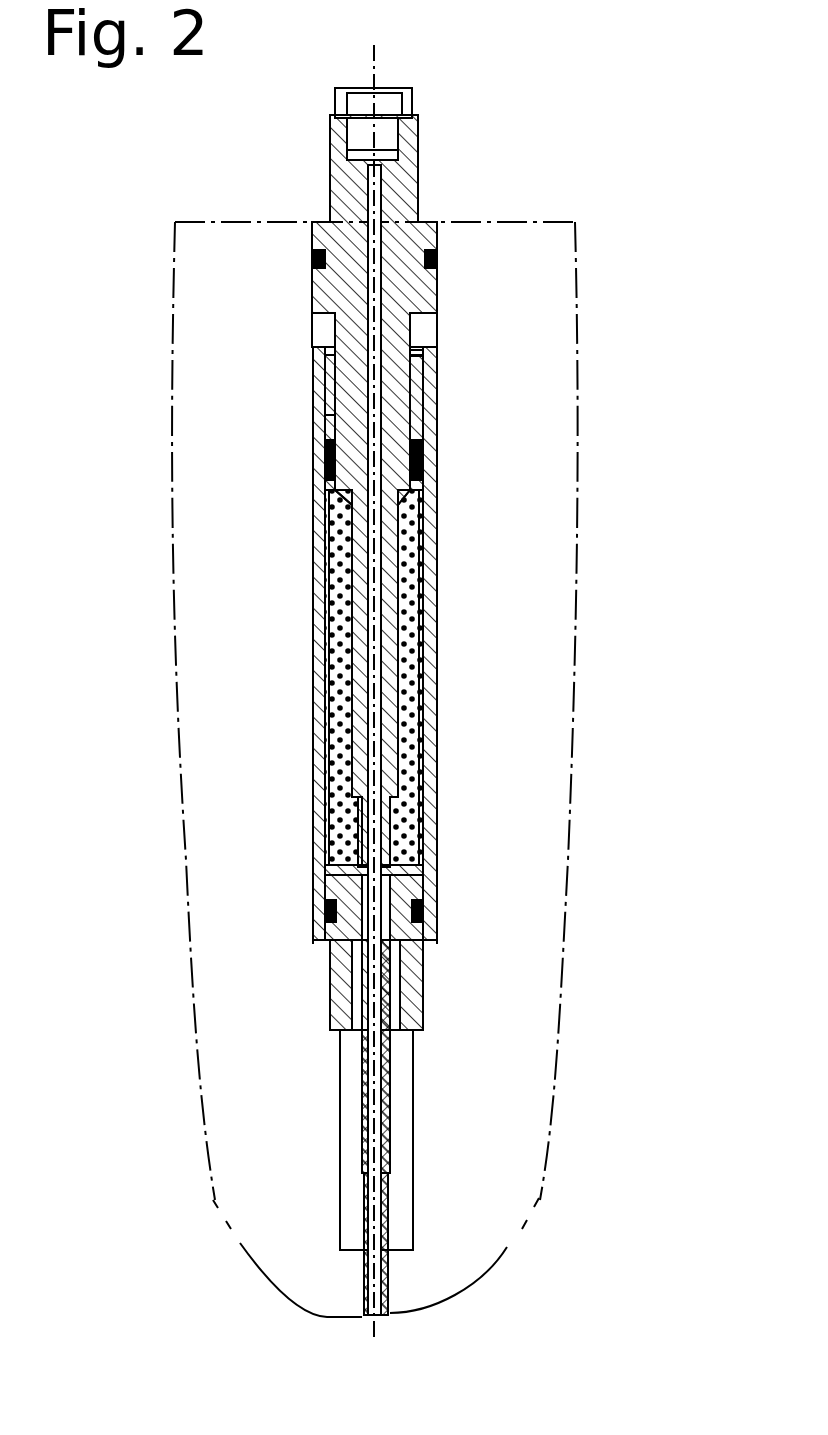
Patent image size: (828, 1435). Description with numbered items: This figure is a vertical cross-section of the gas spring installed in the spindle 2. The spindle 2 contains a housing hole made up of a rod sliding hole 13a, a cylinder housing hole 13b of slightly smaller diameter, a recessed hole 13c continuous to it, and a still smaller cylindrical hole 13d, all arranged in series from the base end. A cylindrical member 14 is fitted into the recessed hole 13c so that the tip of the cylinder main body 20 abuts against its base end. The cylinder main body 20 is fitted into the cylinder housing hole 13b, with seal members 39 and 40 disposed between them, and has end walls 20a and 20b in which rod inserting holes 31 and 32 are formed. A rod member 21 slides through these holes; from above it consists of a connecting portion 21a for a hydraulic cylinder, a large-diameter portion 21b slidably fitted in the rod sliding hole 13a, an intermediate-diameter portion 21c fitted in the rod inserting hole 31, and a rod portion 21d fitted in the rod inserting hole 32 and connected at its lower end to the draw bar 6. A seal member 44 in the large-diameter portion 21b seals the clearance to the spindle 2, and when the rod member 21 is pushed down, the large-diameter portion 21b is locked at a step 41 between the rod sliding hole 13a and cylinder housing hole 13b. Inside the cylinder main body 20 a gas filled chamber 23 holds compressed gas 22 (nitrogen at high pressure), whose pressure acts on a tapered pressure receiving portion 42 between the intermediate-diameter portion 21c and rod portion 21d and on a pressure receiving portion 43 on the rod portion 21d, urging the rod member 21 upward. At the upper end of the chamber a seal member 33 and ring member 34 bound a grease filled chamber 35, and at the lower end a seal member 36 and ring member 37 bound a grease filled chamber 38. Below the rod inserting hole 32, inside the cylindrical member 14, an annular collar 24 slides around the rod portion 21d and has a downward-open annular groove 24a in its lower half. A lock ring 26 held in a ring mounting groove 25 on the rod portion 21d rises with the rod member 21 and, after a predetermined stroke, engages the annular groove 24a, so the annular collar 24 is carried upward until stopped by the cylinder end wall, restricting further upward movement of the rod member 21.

The spindle 2 is at (577, 750).
The draw bar 6 is at (455, 115).
The rod sliding hole 13a is at (420, 207).
The cylinder housing hole 13b is at (435, 570).
The recessed hole 13c is at (423, 985).
The cylindrical hole 13d is at (418, 1188).
The cylindrical member 14 is at (423, 1010).
The cylinder main body 20 is at (320, 705).
The end wall 20a is at (318, 415).
The end wall 20b is at (317, 880).
The rod member 21 is at (420, 190).
The connecting portion 21a is at (335, 118).
The large-diameter portion 21b is at (313, 278).
The intermediate-diameter portion 21c is at (340, 465).
The rod portion 21d is at (352, 635).
The compressed gas 22 is at (435, 710).
The gas filled chamber 23 is at (435, 640).
The annular collar 24 is at (423, 945).
The annular groove 24a is at (423, 1020).
The ring mounting groove 25 is at (423, 965).
The lock ring 26 is at (330, 1005).
The rod inserting hole 31 is at (437, 352).
The rod inserting hole 32 is at (322, 943).
The seal member 33 is at (437, 440).
The ring member 34 is at (437, 490).
The grease filled chamber 35 is at (437, 462).
The seal member 36 is at (437, 890).
The ring member 37 is at (435, 828).
The grease filled chamber 38 is at (437, 862).
The seal member 39 is at (313, 380).
The seal member 40 is at (320, 915).
The step 41 is at (437, 320).
The pressure receiving portion 42 is at (325, 515).
The pressure receiving portion 43 is at (385, 50).
The seal member 44 is at (318, 258).